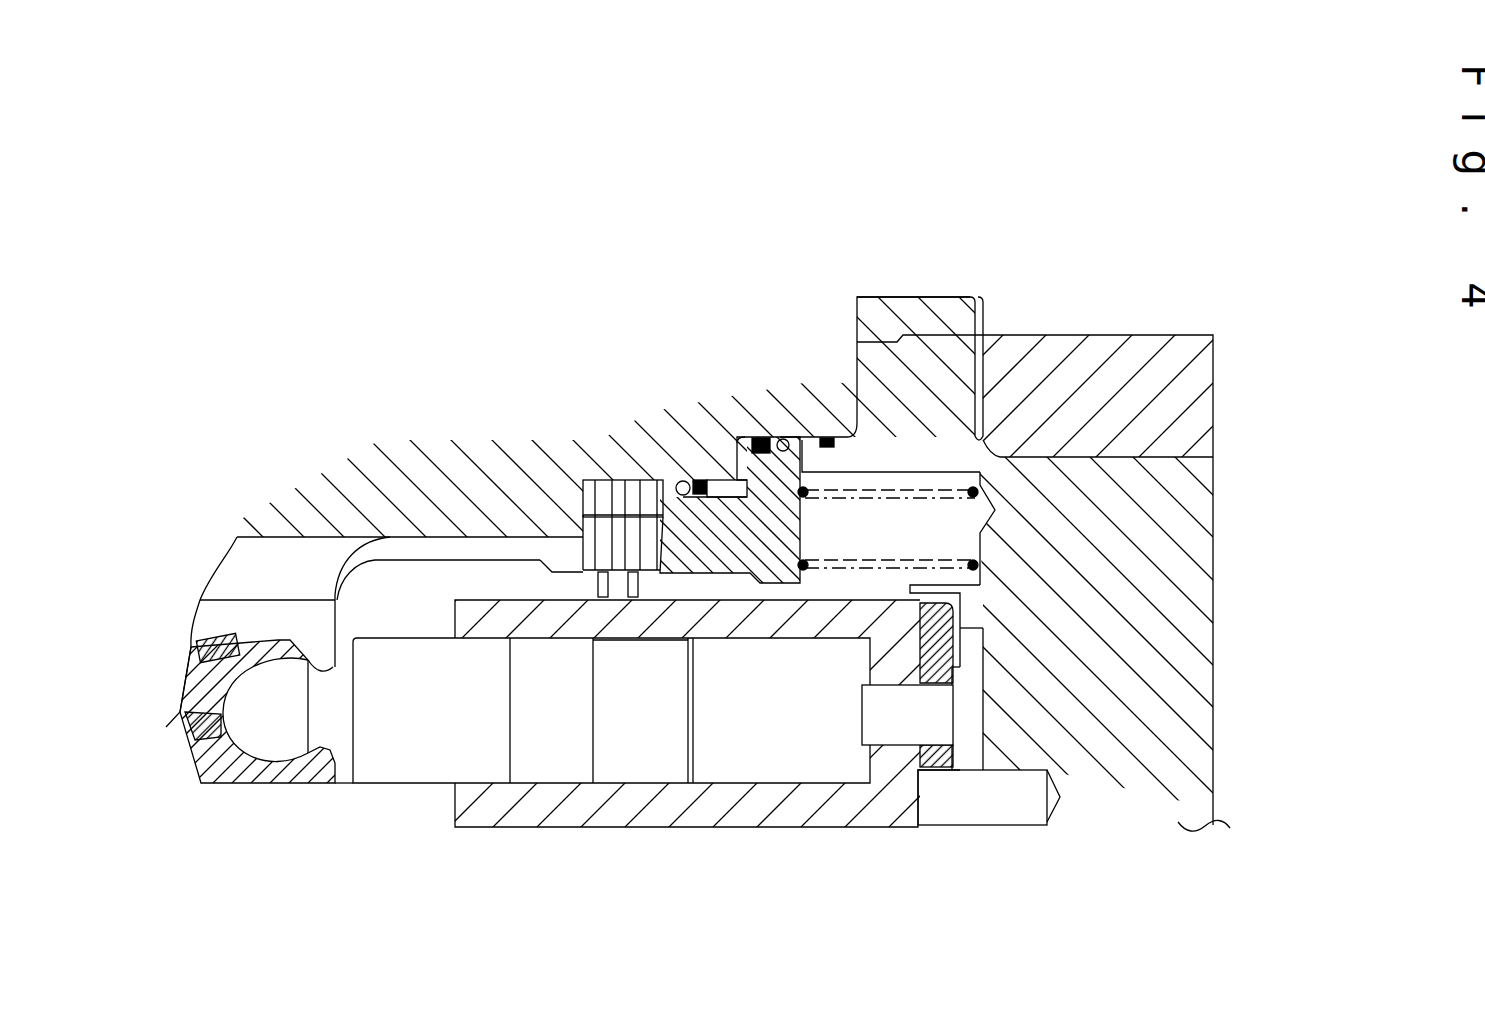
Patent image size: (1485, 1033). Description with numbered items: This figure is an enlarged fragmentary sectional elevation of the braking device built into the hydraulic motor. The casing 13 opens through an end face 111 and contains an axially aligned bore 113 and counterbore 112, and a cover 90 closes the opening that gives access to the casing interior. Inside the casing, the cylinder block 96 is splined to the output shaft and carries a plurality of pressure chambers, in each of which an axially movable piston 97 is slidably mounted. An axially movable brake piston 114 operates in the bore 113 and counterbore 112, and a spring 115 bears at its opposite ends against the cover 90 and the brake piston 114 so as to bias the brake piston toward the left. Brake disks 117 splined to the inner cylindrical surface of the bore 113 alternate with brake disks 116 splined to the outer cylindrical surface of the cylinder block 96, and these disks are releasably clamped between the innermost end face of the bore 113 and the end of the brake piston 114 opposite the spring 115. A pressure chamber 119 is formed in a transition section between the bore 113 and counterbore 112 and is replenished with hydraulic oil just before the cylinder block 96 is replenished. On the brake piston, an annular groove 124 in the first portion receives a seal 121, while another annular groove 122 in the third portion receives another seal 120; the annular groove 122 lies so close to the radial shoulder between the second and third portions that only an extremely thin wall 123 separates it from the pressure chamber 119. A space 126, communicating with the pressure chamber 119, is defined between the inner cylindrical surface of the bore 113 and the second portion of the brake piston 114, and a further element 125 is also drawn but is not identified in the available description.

The casing 13 is at (440, 468).
The cover 90 is at (1185, 620).
The cylinder block 96 is at (790, 805).
The piston 97 is at (637, 770).
The end face 111 is at (868, 342).
The counterbore 112 is at (790, 437).
The bore 113 is at (678, 481).
The brake piston 114 is at (735, 520).
The spring 115 is at (1010, 453).
The brake disks 116 is at (590, 587).
The brake disks 117 is at (647, 480).
The pressure chamber 119 is at (737, 440).
The seal 120 is at (770, 437).
The seal 121 is at (702, 480).
The annular groove 122 is at (803, 492).
The thin wall 123 is at (750, 437).
The annular groove 124 is at (645, 600).
The collar 125 is at (717, 583).
The space 126 is at (803, 597).